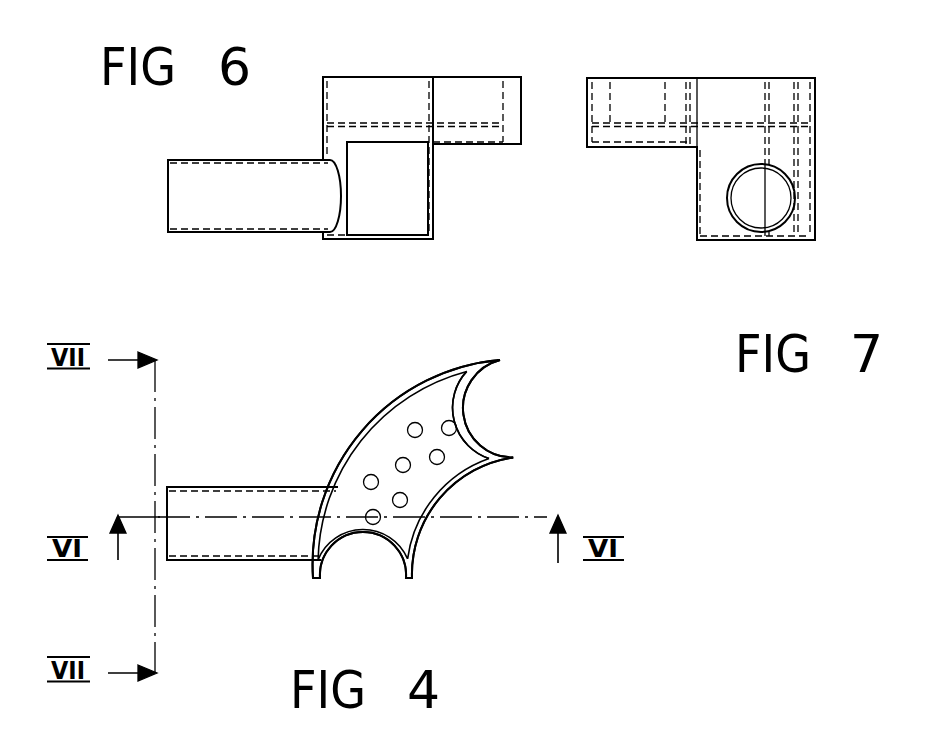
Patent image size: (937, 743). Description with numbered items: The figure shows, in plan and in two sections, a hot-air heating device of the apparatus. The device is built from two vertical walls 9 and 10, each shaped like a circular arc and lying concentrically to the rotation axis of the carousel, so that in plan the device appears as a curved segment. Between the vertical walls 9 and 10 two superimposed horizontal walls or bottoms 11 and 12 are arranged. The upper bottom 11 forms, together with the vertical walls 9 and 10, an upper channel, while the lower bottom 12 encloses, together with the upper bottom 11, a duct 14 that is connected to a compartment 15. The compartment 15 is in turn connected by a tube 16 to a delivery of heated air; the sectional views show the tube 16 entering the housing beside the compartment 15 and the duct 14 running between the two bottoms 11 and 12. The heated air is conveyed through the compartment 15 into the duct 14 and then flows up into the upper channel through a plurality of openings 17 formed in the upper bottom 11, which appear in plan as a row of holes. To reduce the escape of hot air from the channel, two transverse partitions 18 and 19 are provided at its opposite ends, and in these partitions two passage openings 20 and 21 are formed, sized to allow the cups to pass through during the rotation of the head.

In FIG. 4, the vertical wall 9 is at (420, 388).
In FIG. 4, the vertical wall 10 is at (423, 522).
In FIG. 6, the upper bottom 11 is at (400, 120).
In FIG. 4, the upper bottom 11 is at (367, 457).
In FIG. 6, the lower bottom 12 is at (462, 147).
In FIG. 6, the duct 14 is at (490, 135).
In FIG. 7, the duct 14 is at (637, 135).
In FIG. 7, the compartment 15 is at (697, 175).
In FIG. 6, the tube 16 is at (232, 232).
In FIG. 7, the tube 16 is at (727, 202).
In FIG. 4, the tube 16 is at (230, 503).
In FIG. 6, the openings 17 is at (373, 120).
In FIG. 4, the openings 17 is at (400, 462).
In FIG. 4, the transverse partition 18 is at (333, 565).
In FIG. 4, the transverse partition 19 is at (490, 447).
In FIG. 4, the passage opening 20 is at (358, 535).
In FIG. 4, the passage opening 21 is at (463, 410).